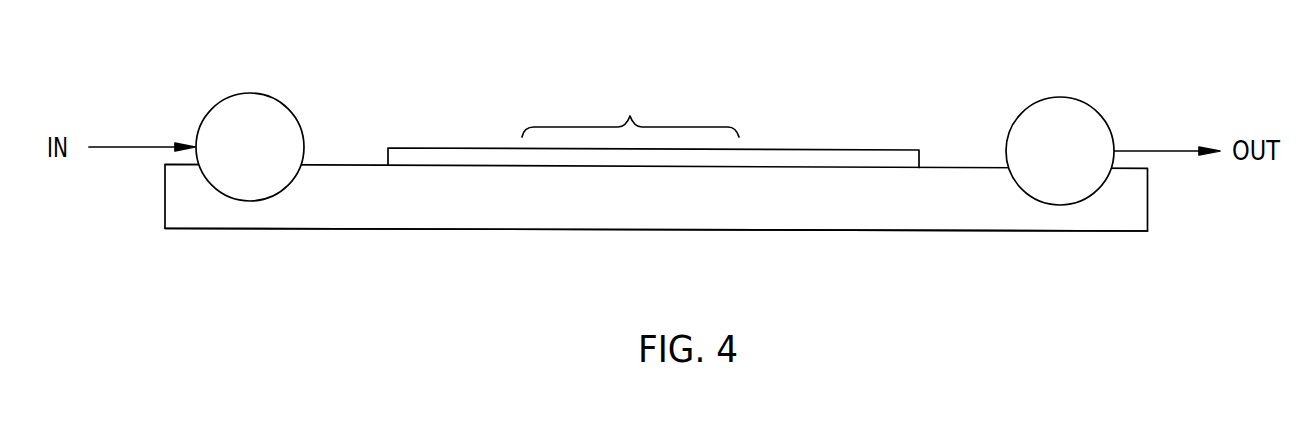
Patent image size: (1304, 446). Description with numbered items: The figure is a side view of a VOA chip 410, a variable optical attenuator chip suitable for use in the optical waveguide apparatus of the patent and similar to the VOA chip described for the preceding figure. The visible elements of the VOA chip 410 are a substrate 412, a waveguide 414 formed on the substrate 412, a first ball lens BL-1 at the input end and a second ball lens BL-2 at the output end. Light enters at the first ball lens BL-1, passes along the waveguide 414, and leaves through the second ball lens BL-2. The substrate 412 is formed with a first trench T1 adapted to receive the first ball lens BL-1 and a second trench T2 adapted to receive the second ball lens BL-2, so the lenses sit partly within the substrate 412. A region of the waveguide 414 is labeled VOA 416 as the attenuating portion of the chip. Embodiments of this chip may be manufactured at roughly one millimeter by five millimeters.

The VOA chip 410 is at (428, 281).
The substrate 412 is at (635, 212).
The waveguide 414 is at (453, 128).
The variable optical attenuator (VOA) region 416 is at (630, 110).
The first ball lens BL-1 is at (250, 147).
The second ball lens BL-2 is at (1060, 151).
The first trench T1 is at (223, 201).
The second trench T2 is at (1033, 202).